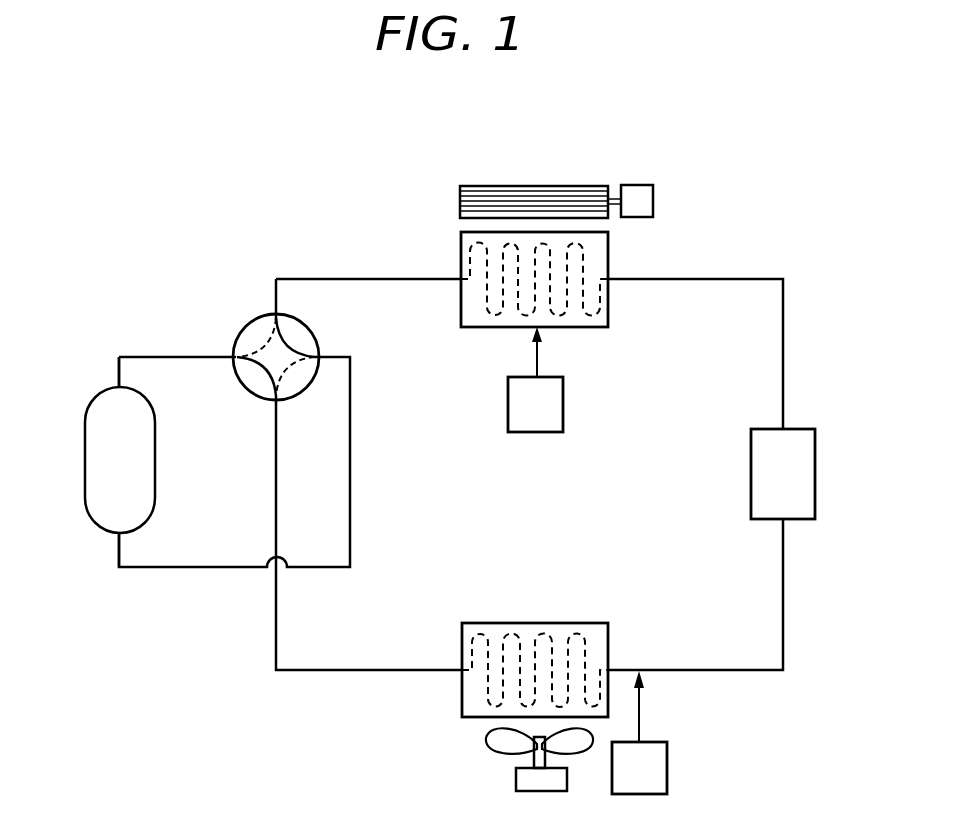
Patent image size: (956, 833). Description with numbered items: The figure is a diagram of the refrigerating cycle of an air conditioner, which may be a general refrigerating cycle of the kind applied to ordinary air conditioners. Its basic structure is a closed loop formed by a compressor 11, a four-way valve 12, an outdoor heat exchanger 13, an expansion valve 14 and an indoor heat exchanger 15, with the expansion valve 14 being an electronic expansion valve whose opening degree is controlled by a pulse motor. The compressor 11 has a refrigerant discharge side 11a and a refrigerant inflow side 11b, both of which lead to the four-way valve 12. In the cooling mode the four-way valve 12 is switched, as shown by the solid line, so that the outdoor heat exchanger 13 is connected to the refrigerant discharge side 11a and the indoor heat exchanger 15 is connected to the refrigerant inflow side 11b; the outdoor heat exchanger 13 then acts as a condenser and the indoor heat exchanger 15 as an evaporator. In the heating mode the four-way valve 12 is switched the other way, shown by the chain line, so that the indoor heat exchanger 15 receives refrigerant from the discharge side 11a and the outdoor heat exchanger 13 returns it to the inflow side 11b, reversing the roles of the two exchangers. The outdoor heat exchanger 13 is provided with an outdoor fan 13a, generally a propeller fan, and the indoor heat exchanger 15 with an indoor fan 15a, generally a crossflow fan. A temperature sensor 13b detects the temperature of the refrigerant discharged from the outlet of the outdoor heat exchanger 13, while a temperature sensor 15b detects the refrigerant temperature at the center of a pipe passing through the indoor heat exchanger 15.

The compressor 11 is at (85, 440).
The refrigerant discharge side 11a is at (118, 357).
The refrigerant inflow side 11b is at (118, 548).
The four-way valve 12 is at (244, 328).
The outdoor heat exchanger 13 is at (574, 623).
The outdoor fan 13a is at (516, 774).
The temperature sensor 13b is at (667, 764).
The expansion valve 14 is at (815, 453).
The indoor heat exchanger 15 is at (461, 238).
The indoor fan 15a is at (478, 185).
The temperature sensor 15b is at (508, 395).